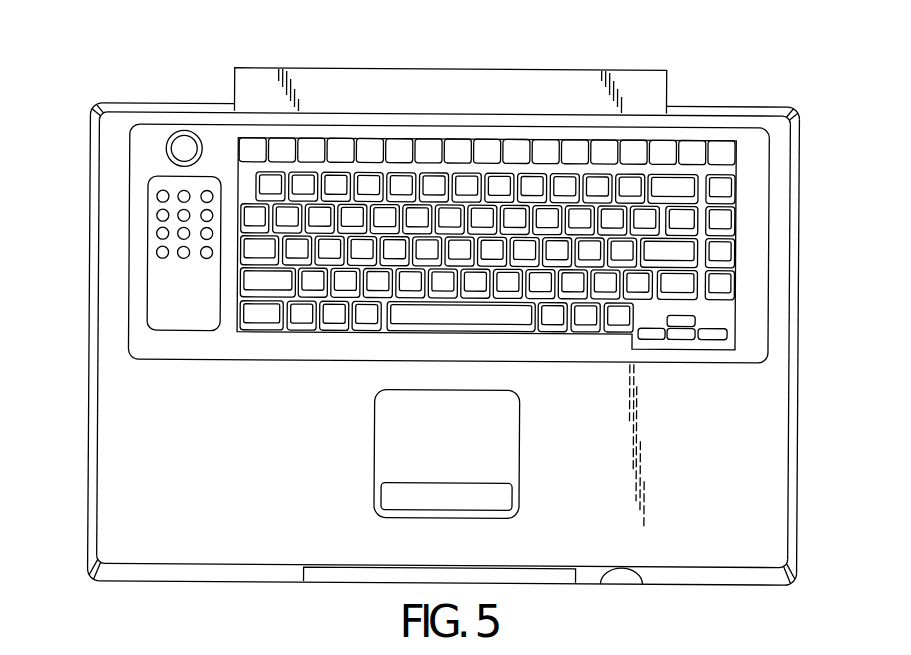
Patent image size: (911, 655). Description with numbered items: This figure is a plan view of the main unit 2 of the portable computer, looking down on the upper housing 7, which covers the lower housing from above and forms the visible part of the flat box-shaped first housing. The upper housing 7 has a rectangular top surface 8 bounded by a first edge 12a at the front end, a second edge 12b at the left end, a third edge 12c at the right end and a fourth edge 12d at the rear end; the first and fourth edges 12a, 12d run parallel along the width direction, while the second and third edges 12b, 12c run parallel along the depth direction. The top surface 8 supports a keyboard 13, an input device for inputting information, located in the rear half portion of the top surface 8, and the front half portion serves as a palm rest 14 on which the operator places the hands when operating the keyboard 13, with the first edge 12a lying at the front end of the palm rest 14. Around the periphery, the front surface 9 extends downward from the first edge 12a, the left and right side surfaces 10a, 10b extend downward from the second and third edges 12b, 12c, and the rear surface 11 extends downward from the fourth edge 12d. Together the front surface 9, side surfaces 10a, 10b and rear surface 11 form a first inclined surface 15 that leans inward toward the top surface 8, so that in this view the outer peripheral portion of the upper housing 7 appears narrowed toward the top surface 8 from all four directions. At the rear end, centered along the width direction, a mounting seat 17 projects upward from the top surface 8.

The main unit 2 is at (115, 96).
The upper housing 7 is at (799, 468).
The top surface 8 is at (762, 397).
The front surface 9 is at (270, 568).
The left side surface 10a is at (90, 378).
The right side surface 10b is at (796, 320).
The rear surface 11 is at (185, 107).
The first edge 12a is at (227, 563).
The second edge 12b is at (98, 442).
The third edge 12c is at (789, 437).
The fourth edge 12d is at (697, 112).
The keyboard 13 is at (692, 227).
The palm rest 14 is at (557, 517).
The first inclined surface 15 is at (762, 107).
The mounting seat 17 is at (545, 80).